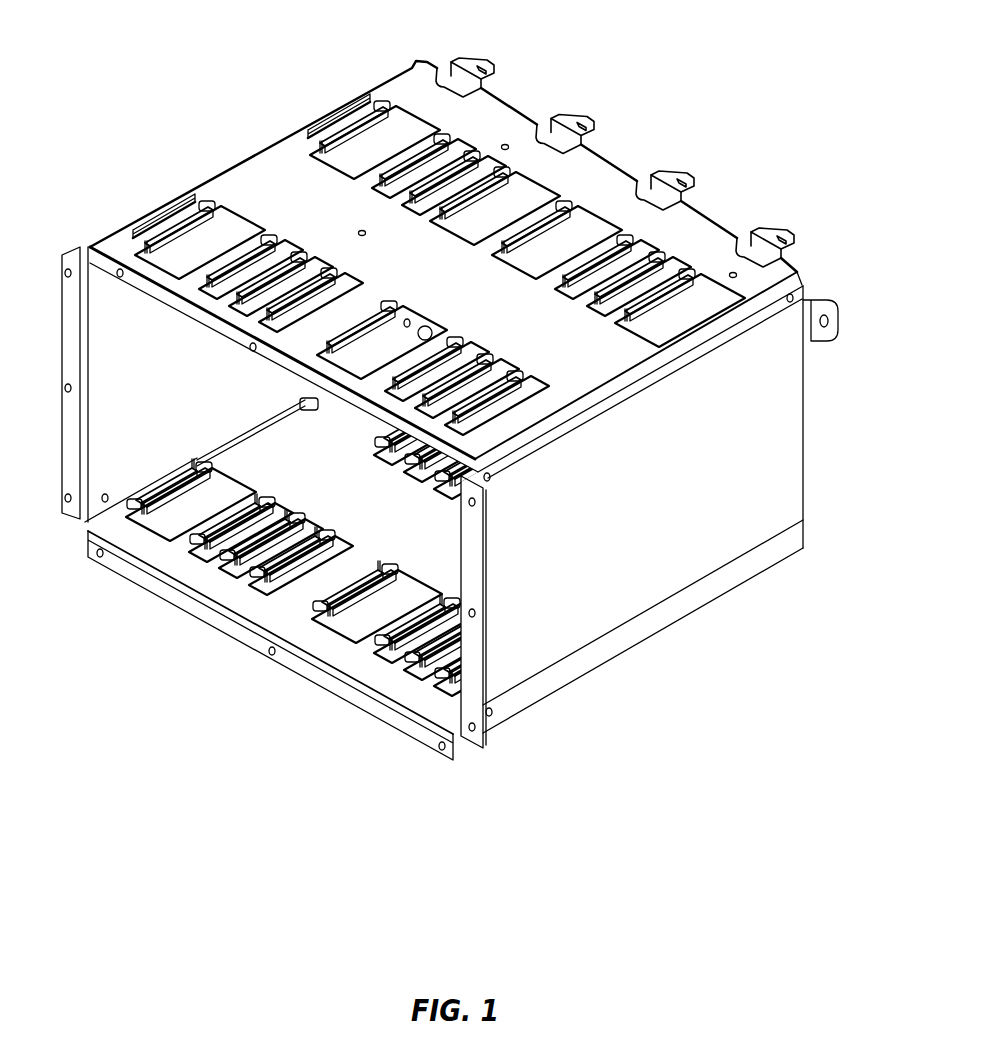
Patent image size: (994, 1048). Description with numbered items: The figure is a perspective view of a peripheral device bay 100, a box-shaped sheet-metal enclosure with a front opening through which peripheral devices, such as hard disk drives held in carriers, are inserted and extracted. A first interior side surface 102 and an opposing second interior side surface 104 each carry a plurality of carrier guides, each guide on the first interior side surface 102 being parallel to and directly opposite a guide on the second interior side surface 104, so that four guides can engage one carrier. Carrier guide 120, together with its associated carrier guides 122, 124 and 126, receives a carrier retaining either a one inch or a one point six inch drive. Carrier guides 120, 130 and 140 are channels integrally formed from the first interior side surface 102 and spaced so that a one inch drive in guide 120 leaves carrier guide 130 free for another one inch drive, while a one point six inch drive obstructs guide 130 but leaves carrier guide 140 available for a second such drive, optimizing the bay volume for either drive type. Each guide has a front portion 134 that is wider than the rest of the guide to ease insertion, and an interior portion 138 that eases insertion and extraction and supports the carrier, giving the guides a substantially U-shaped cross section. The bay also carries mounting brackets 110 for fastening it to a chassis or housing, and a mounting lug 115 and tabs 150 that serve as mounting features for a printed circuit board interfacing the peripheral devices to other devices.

The peripheral device bay 100 is at (181, 84).
The first interior side surface 102 is at (265, 612).
The second interior side surface 104 is at (124, 300).
The mounting brackets 110 is at (484, 558).
The mounting lug 115 is at (840, 320).
The carrier guide 120 is at (289, 542).
The carrier guide 122 is at (297, 415).
The carrier guide 124 is at (186, 203).
The carrier guide 126 is at (322, 110).
The carrier guide 130 is at (186, 554).
The front portion 134 is at (329, 605).
The interior portion 138 is at (365, 592).
The carrier guide 140 is at (222, 572).
The tabs 150 is at (590, 133).